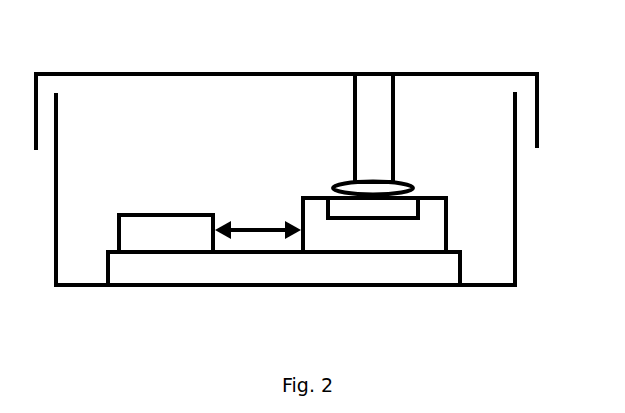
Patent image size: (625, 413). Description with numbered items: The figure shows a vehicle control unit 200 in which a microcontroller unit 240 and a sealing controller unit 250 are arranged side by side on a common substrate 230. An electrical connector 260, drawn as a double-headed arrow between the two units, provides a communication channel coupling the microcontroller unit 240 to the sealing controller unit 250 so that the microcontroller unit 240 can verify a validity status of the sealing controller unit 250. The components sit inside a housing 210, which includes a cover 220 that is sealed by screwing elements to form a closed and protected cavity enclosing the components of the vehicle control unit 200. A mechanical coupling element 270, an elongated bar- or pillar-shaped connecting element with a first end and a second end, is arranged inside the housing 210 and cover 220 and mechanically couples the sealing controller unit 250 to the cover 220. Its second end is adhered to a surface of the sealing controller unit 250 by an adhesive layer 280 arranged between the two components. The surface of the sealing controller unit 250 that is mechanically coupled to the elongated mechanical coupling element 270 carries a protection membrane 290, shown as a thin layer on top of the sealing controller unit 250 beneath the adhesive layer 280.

The vehicle control unit 200 is at (465, 37).
The housing 210 is at (517, 287).
The cover 220 is at (127, 72).
The substrate 230 is at (108, 250).
The microcontroller unit 240 is at (173, 215).
The sealing controller unit 250 is at (446, 226).
The electrical connector 260 is at (258, 226).
The mechanical coupling element 270 is at (353, 120).
The adhesive layer 280 is at (410, 183).
The protection membrane 290 is at (332, 197).